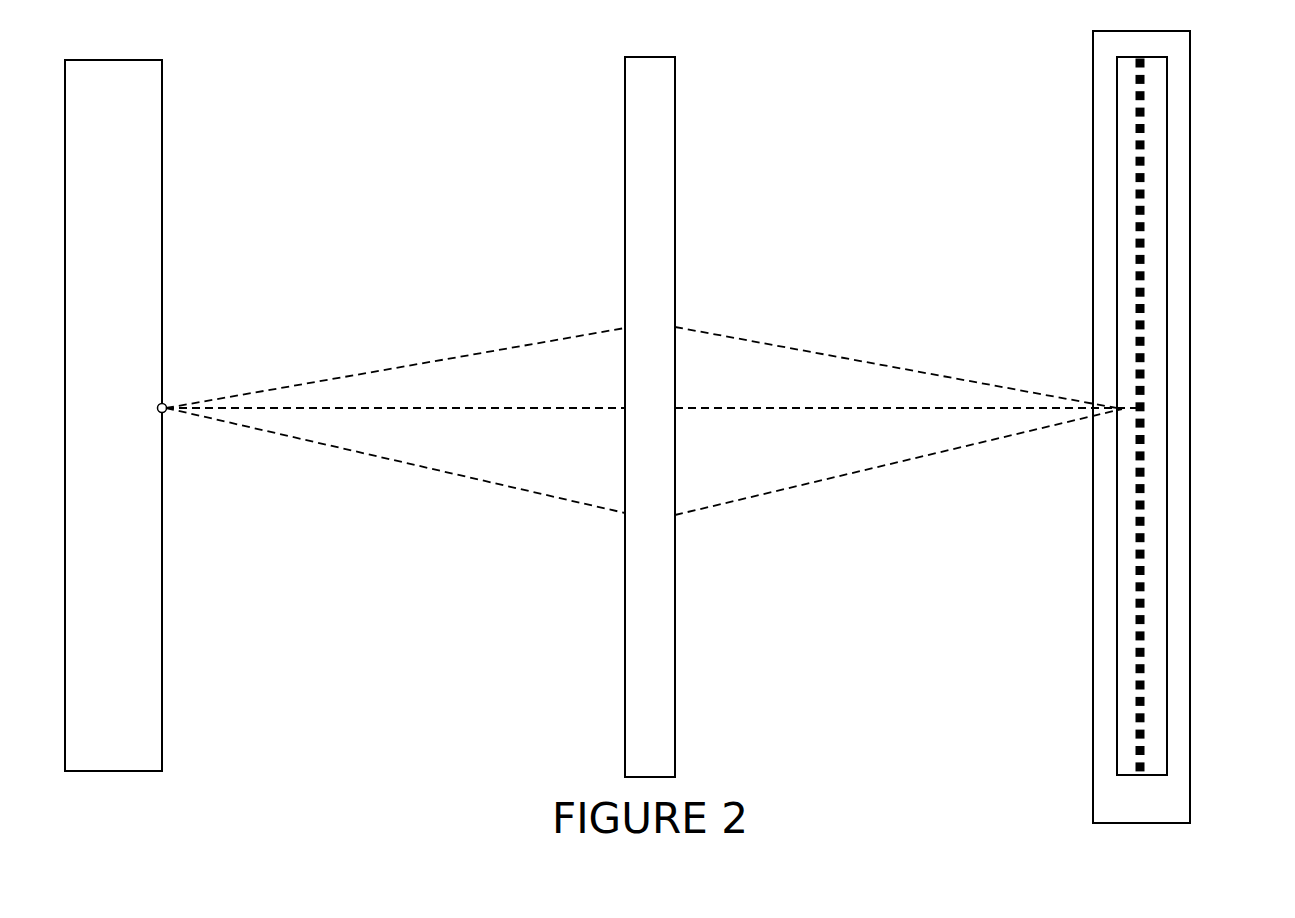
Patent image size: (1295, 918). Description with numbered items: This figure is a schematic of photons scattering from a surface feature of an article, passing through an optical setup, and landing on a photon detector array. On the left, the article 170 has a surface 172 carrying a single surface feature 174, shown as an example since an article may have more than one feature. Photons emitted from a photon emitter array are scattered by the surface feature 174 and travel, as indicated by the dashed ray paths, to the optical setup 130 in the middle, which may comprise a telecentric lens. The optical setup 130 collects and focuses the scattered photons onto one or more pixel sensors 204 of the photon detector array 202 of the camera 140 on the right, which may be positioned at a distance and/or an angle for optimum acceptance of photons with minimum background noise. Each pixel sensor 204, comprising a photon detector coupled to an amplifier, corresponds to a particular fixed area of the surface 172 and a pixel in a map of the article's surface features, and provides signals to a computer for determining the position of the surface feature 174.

The optical setup 130 is at (647, 657).
The camera 140 is at (1168, 812).
The article 170 is at (144, 754).
The surface 172 is at (162, 225).
The surface feature 174 is at (157, 407).
The photon detector array 202 is at (1167, 597).
The pixel sensors 204 is at (1145, 227).